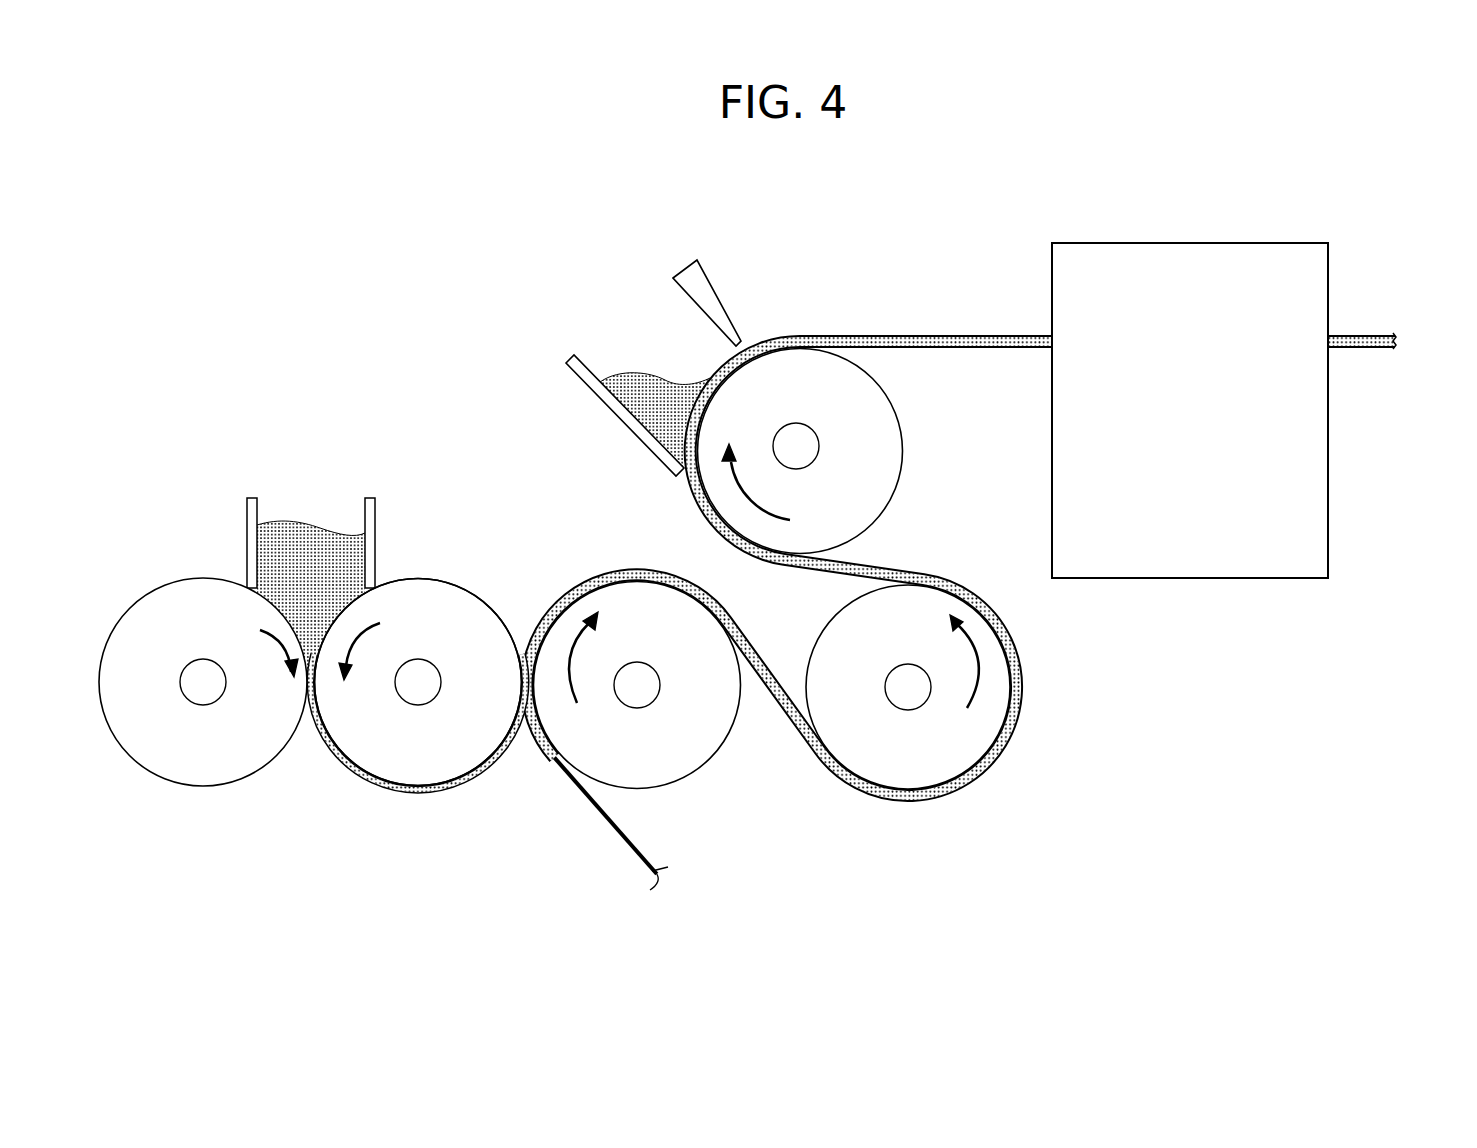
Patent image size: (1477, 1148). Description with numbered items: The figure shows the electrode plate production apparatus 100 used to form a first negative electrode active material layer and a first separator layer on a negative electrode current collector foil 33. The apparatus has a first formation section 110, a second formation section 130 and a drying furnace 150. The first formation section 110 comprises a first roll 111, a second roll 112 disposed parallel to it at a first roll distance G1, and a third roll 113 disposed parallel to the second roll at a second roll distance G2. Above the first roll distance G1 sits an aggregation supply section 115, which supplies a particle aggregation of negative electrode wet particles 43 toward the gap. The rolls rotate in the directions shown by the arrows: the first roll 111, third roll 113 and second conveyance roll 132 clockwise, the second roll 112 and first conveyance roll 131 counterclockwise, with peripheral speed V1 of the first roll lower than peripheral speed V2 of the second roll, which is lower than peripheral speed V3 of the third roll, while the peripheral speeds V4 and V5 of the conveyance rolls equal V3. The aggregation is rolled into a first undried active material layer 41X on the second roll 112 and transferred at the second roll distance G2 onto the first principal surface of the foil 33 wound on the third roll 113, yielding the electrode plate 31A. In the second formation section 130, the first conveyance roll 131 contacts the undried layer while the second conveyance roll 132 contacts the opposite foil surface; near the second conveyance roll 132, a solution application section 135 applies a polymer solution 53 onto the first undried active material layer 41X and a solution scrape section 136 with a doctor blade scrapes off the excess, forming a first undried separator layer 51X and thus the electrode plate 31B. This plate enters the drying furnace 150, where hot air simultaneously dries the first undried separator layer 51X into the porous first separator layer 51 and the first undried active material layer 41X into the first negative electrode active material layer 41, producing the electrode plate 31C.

The electrode plate production apparatus 100 is at (365, 310).
The first formation section 110 is at (410, 810).
The first roll 111 is at (181, 749).
The second roll 112 is at (396, 749).
The third roll 113 is at (615, 751).
The aggregation supply section 115 is at (248, 510).
The second formation section 130 is at (600, 325).
The first conveyance roll 131 is at (886, 751).
The second conveyance roll 132 is at (777, 406).
The solution application section 135 is at (587, 377).
The solution scrape section 136 is at (700, 278).
The drying furnace 150 is at (1156, 424).
The negative electrode current collector foil 33 is at (622, 835).
The first negative electrode active material layer 41 is at (1377, 333).
The first undried active material layer 41X is at (580, 582).
The negative electrode wet particles 43 is at (318, 555).
The first separator layer 51 is at (1351, 332).
The first undried separator layer 51X is at (847, 330).
The polymer solution 53 is at (660, 385).
The electrode plate 31A is at (775, 702).
The electrode plate 31B is at (957, 352).
The electrode plate 31C is at (1358, 352).
The first roll distance G1 is at (310, 743).
The second roll distance G2 is at (530, 747).
The peripheral speed of first roll V1 is at (264, 654).
The peripheral speed of second roll V2 is at (371, 651).
The peripheral speed of third roll V3 is at (591, 657).
The peripheral speed of first conveyance roll V4 is at (954, 661).
The peripheral speed of second conveyance roll V5 is at (758, 482).